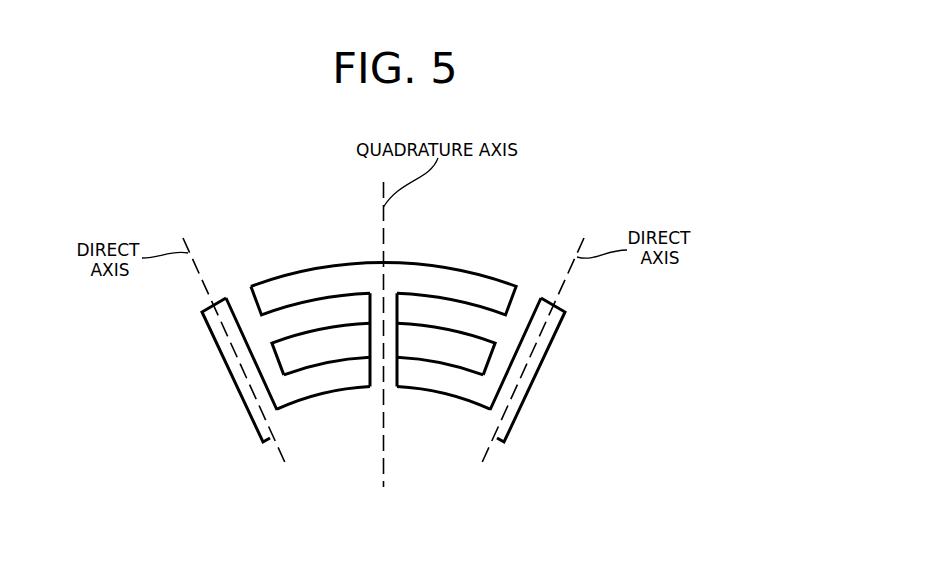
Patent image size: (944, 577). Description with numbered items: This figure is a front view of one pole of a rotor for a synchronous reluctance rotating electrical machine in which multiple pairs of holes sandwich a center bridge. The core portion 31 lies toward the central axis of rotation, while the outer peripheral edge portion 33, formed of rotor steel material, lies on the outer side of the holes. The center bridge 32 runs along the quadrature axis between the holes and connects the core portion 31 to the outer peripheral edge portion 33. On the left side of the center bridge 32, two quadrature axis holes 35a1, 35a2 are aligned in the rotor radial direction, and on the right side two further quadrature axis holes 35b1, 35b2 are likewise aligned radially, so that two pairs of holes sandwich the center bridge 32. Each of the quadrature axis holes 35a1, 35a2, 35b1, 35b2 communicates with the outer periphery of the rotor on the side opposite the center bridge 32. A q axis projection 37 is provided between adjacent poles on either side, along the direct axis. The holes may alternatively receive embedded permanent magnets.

The core portion 31 is at (373, 364).
The center bridge 32 is at (378, 385).
The outer peripheral edge portion 33 is at (418, 277).
The quadrature axis hole 35a1 is at (342, 312).
The quadrature axis hole 35a2 is at (323, 383).
The quadrature axis hole 35b1 is at (455, 315).
The quadrature axis hole 35b2 is at (433, 380).
The q axis projection 37 is at (208, 304).